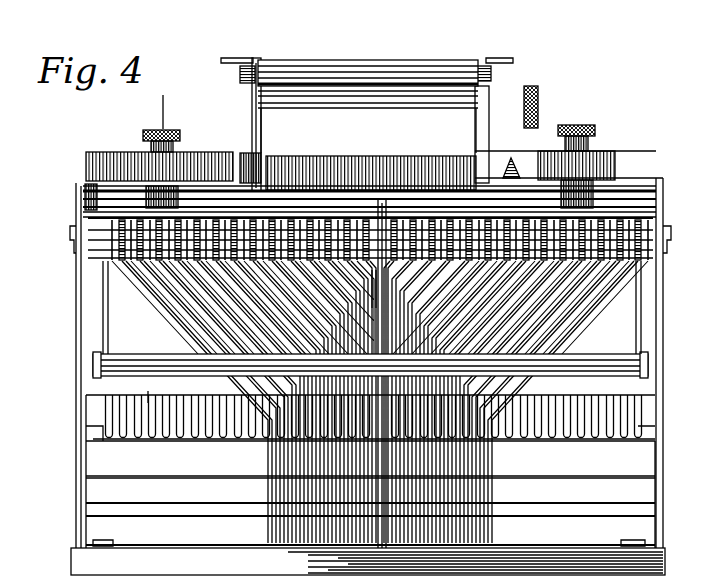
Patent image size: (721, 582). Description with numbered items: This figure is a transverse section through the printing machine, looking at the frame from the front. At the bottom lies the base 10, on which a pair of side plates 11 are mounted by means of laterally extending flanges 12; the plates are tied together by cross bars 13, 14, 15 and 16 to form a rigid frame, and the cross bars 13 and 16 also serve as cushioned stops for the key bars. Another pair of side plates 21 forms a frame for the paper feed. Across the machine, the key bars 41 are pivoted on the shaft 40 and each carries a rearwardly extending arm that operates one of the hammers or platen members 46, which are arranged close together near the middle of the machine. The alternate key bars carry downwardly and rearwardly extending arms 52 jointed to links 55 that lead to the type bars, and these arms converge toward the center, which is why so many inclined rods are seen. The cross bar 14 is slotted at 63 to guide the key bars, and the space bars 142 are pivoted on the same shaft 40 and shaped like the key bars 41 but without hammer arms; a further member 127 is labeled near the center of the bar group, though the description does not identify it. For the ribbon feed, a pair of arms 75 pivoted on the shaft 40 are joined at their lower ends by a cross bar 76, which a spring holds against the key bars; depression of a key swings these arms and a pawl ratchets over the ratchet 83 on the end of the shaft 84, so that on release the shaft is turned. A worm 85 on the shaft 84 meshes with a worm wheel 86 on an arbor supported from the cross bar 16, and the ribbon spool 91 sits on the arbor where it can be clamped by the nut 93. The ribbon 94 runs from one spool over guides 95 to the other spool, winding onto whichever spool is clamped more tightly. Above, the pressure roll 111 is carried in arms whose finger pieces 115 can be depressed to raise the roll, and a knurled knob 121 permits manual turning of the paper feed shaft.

The base 10 is at (657, 548).
The side plates 11 is at (655, 302).
The laterally extending flanges 12 is at (625, 537).
The cross bar 13 is at (573, 502).
The cross bar 14 is at (555, 428).
The cross bar 15 is at (543, 482).
The cross bar 16 is at (640, 200).
The side plates 21 is at (477, 107).
The shaft 40 is at (665, 228).
The key bar 41 is at (630, 225).
The hammer or platen member 46 is at (308, 150).
The downwardly and rearwardly extending arm 52 is at (575, 285).
The link 55 is at (200, 300).
The slots 63 is at (645, 403).
The arms 75 is at (633, 330).
The cross bar 76 is at (590, 366).
The ratchet 83 is at (77, 192).
The shaft 84 is at (340, 190).
The worm 85 is at (598, 185).
The worm wheel 86 is at (590, 175).
The ribbon spool 91 is at (620, 150).
The clamping nut 93 is at (580, 120).
The ribbon 94 is at (502, 160).
The guides 95 is at (460, 147).
The pressure roll 111 is at (335, 62).
The finger piece 115 is at (492, 52).
The knurled knob 121 is at (530, 90).
The rod 127 is at (364, 258).
The space bars 142 is at (370, 262).